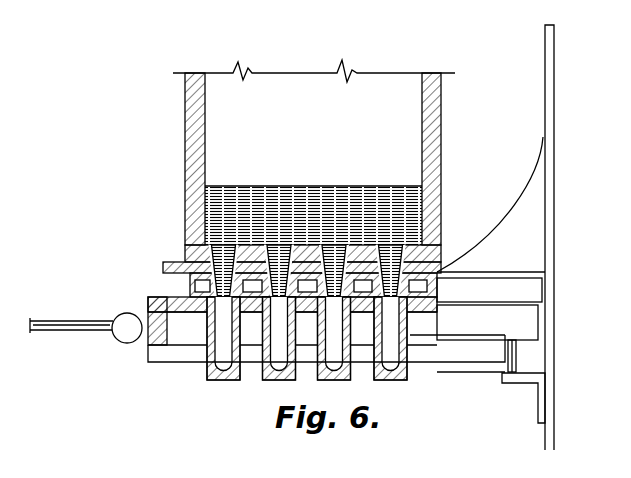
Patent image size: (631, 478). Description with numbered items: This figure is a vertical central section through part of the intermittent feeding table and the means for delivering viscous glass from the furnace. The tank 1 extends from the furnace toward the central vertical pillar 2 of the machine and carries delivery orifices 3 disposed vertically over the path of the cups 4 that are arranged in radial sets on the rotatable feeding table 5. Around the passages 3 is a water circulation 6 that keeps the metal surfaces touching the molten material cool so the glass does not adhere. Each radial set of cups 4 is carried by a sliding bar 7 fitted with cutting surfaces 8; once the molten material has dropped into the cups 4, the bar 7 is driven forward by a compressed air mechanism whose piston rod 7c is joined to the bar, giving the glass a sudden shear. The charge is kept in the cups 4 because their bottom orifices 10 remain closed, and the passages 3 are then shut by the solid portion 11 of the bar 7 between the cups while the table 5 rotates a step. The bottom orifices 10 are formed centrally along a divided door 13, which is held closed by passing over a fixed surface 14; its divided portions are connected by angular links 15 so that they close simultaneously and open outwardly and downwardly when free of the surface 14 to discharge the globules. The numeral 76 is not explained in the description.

The tank 1 is at (342, 150).
The central vertical pillar 2 is at (553, 322).
The delivery orifices 3 is at (200, 248).
The cups 4 is at (228, 335).
The feeding table 5 is at (447, 222).
The water circulation 6 is at (165, 268).
The sliding bar 7 is at (150, 302).
The piston rod 7c is at (60, 335).
The cutting surfaces 8 is at (192, 290).
The bottom orifices 10 is at (220, 378).
The solid portion 11 is at (260, 313).
The divided door 13 is at (463, 373).
The fixed surface 14 is at (533, 378).
The angular links 15 is at (518, 356).
The ball 76 is at (120, 338).